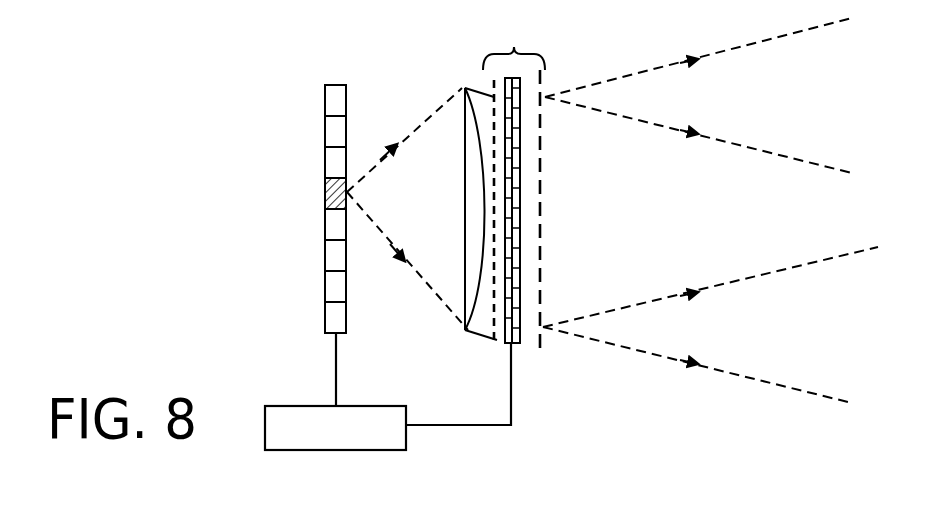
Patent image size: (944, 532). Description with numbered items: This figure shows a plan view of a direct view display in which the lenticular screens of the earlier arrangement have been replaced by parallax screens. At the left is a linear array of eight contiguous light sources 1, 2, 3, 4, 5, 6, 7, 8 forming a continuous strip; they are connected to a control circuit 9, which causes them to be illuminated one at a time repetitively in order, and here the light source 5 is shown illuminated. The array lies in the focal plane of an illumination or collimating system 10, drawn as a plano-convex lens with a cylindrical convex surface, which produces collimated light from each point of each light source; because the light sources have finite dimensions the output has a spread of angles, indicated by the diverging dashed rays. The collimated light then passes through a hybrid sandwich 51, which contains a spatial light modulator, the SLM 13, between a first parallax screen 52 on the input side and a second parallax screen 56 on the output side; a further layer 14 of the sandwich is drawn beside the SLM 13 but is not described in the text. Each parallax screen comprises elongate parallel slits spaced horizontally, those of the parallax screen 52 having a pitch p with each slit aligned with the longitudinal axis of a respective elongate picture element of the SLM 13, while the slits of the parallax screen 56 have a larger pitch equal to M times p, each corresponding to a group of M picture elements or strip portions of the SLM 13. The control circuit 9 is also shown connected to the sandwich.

The light source 1 is at (325, 324).
The light source 2 is at (325, 291).
The light source 3 is at (325, 260).
The light source 4 is at (325, 230).
The light source 5 is at (325, 195).
The light source 6 is at (346, 163).
The light source 7 is at (325, 134).
The light source 8 is at (326, 85).
The control circuit 9 is at (354, 451).
The collimating system 10 is at (465, 88).
The SLM 13 is at (506, 345).
The liquid crystal cell 14 is at (521, 345).
The hybrid sandwich 51 is at (514, 47).
The parallax screen 52 is at (496, 344).
The parallax screen 56 is at (543, 345).